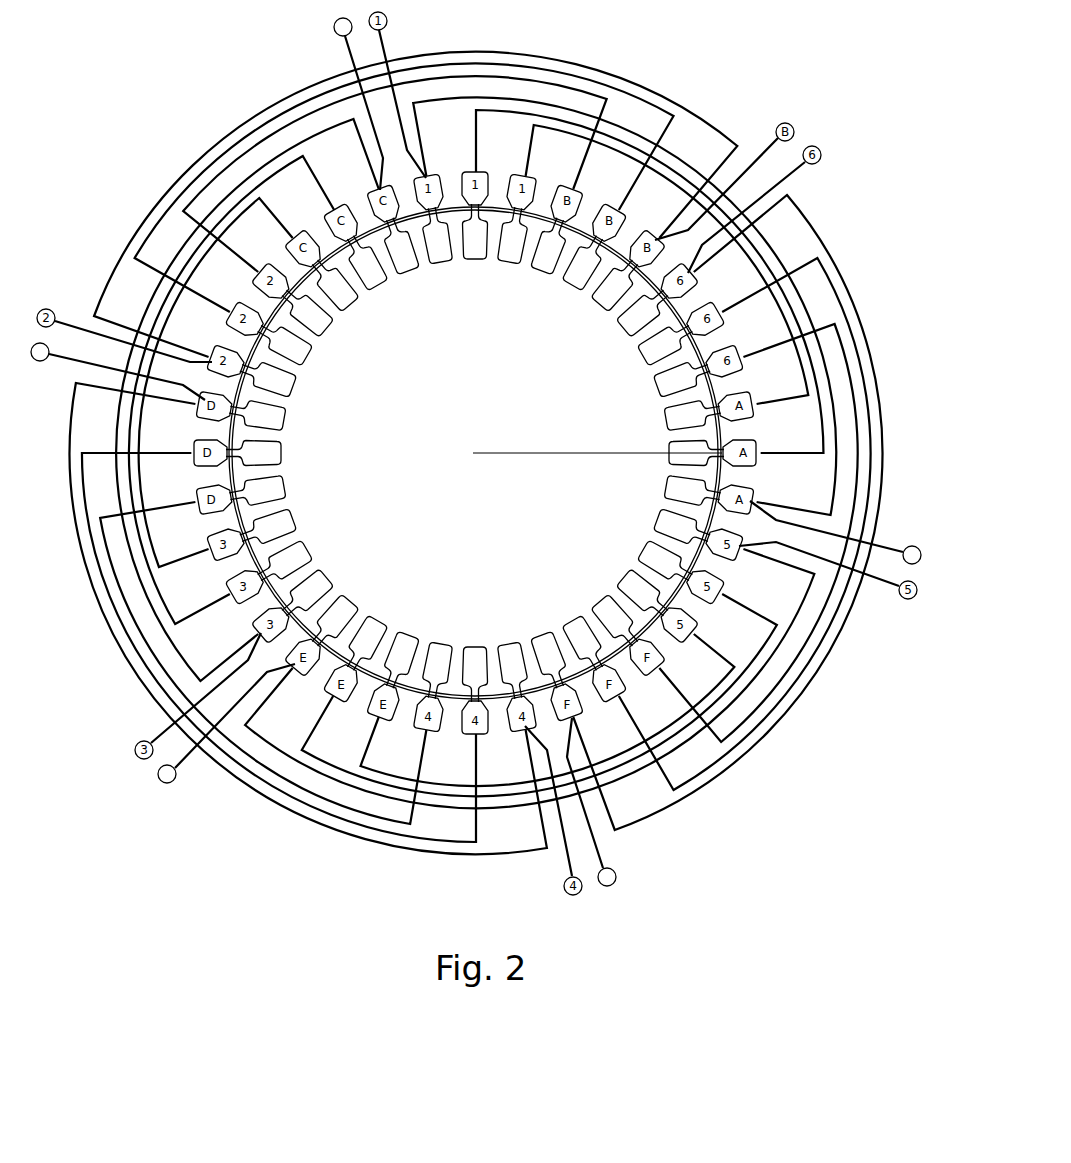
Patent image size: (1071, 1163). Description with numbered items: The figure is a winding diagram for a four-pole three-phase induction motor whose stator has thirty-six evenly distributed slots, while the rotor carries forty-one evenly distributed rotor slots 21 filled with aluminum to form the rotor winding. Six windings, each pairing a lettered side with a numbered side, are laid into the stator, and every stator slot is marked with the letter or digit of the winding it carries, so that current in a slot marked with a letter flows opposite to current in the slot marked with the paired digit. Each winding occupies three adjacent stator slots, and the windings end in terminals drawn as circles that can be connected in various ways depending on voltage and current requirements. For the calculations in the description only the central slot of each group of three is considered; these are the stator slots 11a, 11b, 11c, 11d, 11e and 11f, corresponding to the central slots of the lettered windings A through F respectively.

The central stator slot of winding A 11a is at (752, 450).
The central stator slot of winding B 11b is at (621, 216).
The central stator slot of winding C 11c is at (297, 240).
The central stator slot of winding D 11d is at (205, 458).
The central stator slot of winding E 11e is at (296, 666).
The central stator slot of winding F 11f is at (625, 686).
The rotor slot 21 is at (622, 306).